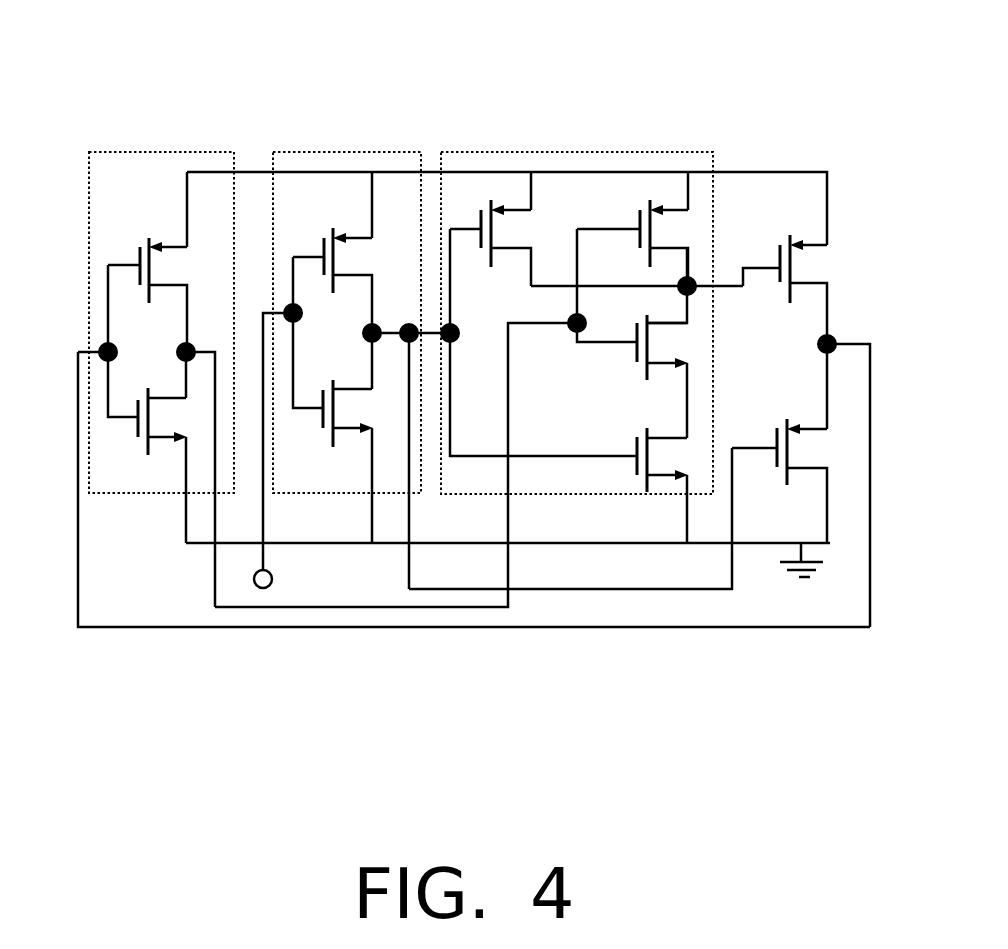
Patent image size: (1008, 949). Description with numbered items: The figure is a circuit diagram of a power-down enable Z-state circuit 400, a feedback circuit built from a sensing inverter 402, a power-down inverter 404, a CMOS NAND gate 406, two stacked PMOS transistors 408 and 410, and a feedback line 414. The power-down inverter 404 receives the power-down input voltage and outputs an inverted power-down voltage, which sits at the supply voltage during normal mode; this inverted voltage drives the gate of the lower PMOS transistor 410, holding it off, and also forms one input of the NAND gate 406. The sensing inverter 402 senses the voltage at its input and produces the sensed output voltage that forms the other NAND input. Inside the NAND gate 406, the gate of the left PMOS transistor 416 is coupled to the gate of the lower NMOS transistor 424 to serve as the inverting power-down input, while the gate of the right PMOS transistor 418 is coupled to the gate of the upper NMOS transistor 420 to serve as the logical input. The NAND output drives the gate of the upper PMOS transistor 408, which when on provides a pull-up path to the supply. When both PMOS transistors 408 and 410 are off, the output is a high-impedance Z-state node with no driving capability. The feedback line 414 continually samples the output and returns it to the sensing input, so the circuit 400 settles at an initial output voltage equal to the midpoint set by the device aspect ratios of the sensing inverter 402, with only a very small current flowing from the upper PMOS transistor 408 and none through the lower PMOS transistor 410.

The power-down enable Z-state circuit 400 is at (472, 30).
The sensing inverter 402 is at (148, 152).
The power-down inverter 404 is at (313, 152).
The NAND gate 406 is at (493, 152).
The upper PMOS transistor 408 is at (828, 243).
The lower PMOS transistor 410 is at (827, 429).
The feedback line 414 is at (552, 634).
The left PMOS transistor 416 is at (531, 210).
The right PMOS transistor 418 is at (640, 212).
The upper NMOS transistor 420 is at (639, 326).
The lower NMOS transistor 424 is at (637, 438).